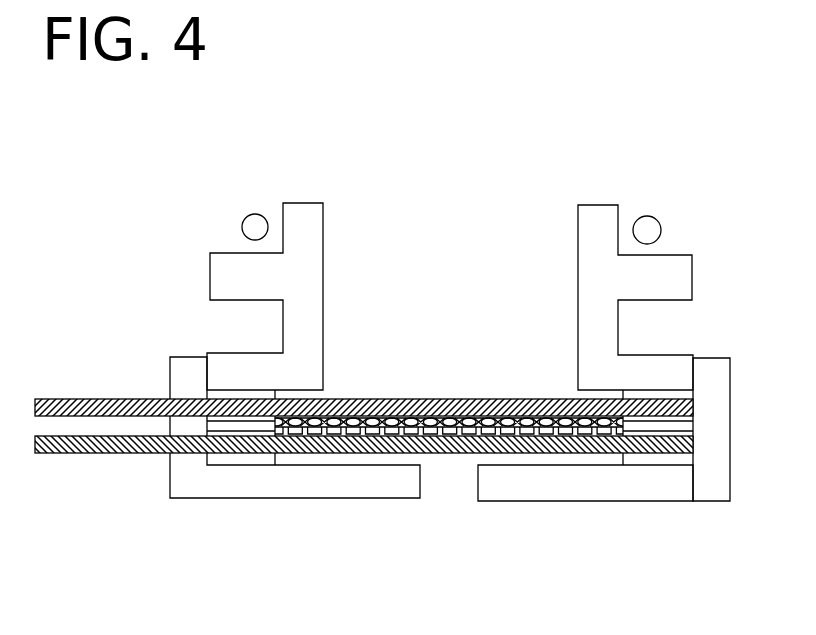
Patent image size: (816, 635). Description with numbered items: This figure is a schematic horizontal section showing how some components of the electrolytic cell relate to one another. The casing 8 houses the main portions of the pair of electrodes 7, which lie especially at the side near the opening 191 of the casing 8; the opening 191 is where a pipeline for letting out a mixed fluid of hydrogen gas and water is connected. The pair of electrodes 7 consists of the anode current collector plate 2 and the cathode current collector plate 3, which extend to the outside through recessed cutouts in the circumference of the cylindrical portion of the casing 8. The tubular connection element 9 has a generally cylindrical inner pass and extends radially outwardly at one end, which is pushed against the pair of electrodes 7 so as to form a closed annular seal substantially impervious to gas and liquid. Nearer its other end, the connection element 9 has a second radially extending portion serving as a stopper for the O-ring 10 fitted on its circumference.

The anode current collector plate 2 is at (63, 398).
The cathode current collector plate 3 is at (76, 453).
The pair of electrodes 7 is at (339, 420).
The casing 8 is at (710, 460).
The tubular connection element 9 is at (587, 247).
The O-ring 10 is at (255, 224).
The opening 191 is at (476, 486).